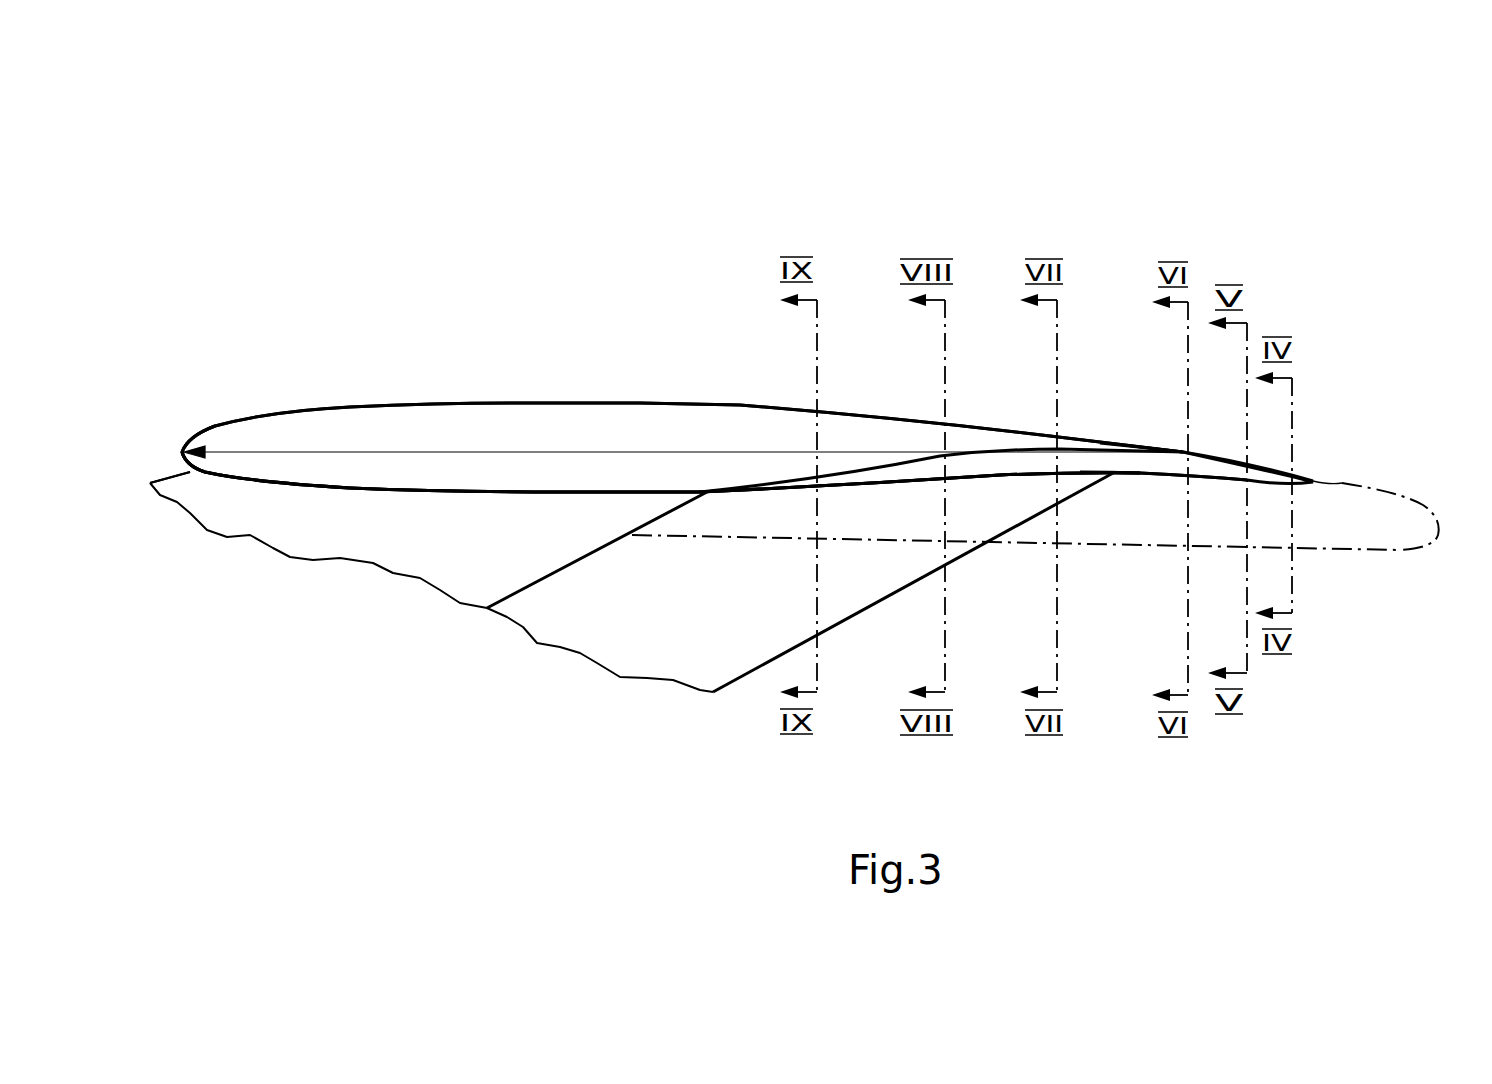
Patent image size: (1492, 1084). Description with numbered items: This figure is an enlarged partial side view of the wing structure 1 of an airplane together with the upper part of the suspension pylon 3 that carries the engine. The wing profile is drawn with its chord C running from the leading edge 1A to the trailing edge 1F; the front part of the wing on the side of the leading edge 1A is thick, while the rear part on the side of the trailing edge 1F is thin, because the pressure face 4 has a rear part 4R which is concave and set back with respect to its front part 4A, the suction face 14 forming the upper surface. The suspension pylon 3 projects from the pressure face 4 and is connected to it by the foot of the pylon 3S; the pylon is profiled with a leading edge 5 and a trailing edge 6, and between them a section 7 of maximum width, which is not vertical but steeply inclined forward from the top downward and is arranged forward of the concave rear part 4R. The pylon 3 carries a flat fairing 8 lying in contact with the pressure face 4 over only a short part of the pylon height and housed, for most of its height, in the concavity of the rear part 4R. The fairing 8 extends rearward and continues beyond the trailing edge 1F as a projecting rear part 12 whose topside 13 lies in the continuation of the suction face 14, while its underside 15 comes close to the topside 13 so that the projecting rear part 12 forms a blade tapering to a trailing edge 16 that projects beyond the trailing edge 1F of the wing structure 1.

The wing structure 1 is at (518, 428).
The leading edge 1A is at (181, 456).
The trailing edge 1F is at (1203, 452).
The suspension pylon 3 is at (424, 545).
The foot of the pylon 3S is at (862, 480).
The pressure face 4 is at (320, 505).
The front part of the pressure face 4A is at (527, 512).
The rear part of the pressure face 4R is at (1017, 472).
The leading edge of the pylon 5 is at (168, 478).
The trailing edge of the pylon 6 is at (850, 620).
The section of maximum width 7 is at (595, 555).
The fairing 8 is at (1137, 466).
The projecting rear part 12 is at (1268, 477).
The topside 13 is at (1253, 458).
The suction face 14 is at (648, 402).
The underside 15 is at (1177, 477).
The trailing edge of the fairing 16 is at (1345, 485).
The chord C is at (683, 440).